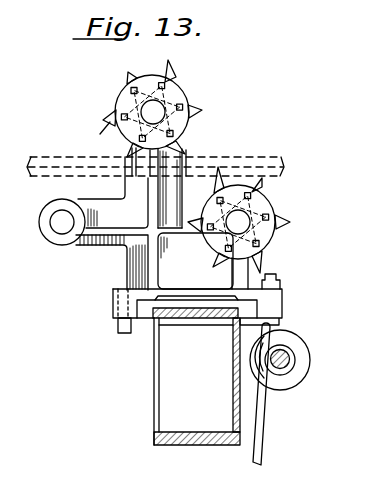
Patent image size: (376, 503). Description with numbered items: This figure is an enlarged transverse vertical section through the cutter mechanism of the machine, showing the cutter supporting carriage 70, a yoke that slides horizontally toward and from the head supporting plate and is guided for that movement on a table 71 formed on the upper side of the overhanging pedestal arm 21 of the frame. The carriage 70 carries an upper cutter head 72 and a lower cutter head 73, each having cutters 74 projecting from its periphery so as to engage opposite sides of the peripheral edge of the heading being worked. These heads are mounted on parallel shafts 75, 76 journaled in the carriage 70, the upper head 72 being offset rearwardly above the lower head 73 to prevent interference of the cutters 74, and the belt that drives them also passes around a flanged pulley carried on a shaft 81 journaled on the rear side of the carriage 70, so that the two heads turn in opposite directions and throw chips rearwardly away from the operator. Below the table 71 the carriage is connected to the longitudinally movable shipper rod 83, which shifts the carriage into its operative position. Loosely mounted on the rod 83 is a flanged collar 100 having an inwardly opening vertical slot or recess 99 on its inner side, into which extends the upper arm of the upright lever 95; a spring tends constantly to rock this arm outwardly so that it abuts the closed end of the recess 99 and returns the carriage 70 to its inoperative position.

The overhanging arm 21 is at (212, 444).
The cutter supporting carriage 70 is at (179, 240).
The table 71 is at (184, 305).
The upper cutter head 72 is at (179, 96).
The lower cutter head 73 is at (269, 200).
The cutters 74 is at (128, 167).
The upper cutter head shaft 75 is at (160, 117).
The lower cutter head shaft 76 is at (246, 226).
The flanged pulley shaft 81 is at (63, 226).
The shipper rod 83 is at (289, 369).
The upright lever 95 is at (262, 438).
The vertical slot 99 is at (261, 363).
The flanged collar 100 is at (291, 347).